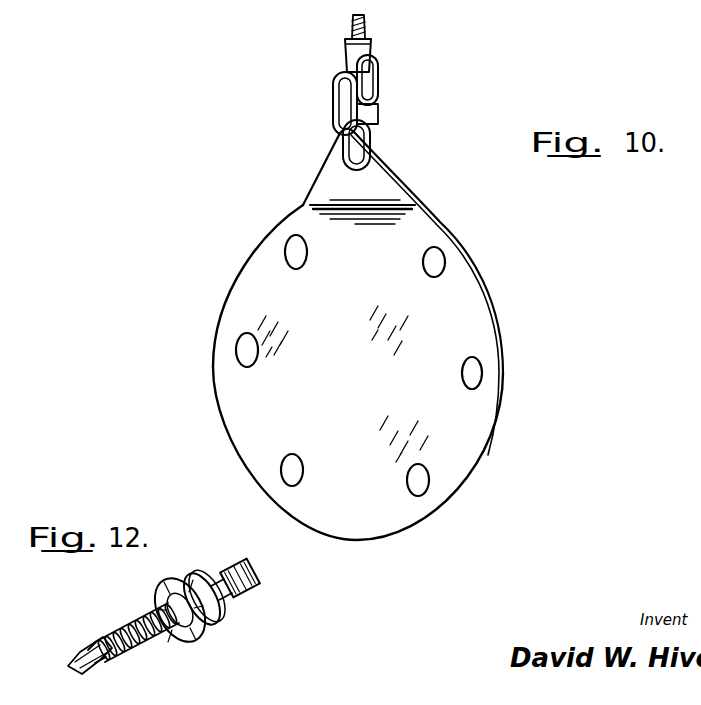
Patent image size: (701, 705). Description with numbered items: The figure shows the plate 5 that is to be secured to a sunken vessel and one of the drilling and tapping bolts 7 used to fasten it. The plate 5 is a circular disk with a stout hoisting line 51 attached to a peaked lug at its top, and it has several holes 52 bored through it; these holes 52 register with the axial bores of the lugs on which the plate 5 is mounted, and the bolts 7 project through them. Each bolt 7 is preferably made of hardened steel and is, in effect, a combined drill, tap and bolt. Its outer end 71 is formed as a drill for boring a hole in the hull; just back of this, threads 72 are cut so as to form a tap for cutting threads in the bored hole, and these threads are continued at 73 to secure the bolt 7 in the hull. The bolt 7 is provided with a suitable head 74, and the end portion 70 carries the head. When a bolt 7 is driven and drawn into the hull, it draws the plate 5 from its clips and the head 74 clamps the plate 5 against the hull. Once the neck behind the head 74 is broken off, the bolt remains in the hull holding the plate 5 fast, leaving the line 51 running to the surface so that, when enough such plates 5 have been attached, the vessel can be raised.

In FIG. 10, the plate 5 is at (358, 334).
In FIG. 10, the hoisting line 51 is at (365, 39).
In FIG. 10, the holes 52 is at (423, 262).
In FIG. 12, the drilling and tapping bolt 7 is at (147, 604).
In FIG. 12, the screw head 70 is at (238, 568).
In FIG. 12, the drill end 71 is at (72, 664).
In FIG. 12, the tap threads 72 is at (100, 640).
In FIG. 12, the securing threads 73 is at (134, 622).
In FIG. 12, the head 74 is at (172, 588).